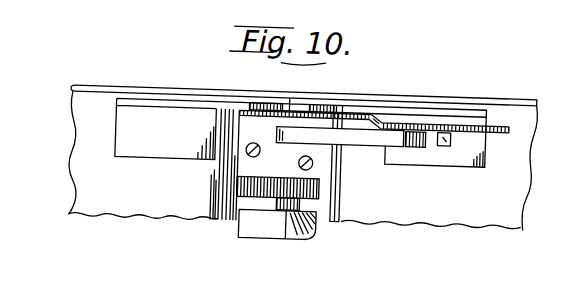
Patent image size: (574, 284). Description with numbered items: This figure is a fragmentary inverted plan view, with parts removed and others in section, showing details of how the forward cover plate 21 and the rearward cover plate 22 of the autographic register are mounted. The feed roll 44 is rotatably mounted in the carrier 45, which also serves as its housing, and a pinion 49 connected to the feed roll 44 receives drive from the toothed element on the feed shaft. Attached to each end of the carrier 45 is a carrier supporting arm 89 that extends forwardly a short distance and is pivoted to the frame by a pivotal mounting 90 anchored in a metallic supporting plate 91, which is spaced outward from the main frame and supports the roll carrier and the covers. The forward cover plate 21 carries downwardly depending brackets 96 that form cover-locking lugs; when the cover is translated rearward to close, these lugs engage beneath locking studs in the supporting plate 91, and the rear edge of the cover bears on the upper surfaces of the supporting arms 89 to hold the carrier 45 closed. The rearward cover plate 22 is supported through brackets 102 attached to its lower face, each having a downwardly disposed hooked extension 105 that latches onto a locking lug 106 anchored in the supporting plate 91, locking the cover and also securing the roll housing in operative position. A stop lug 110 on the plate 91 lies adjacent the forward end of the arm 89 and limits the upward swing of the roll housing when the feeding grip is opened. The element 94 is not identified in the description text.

The forward cover plate 21 is at (427, 207).
The rearward cover plate 22 is at (82, 130).
The feed roll 44 is at (273, 224).
The carrier 45 is at (330, 214).
The pinion 49 is at (242, 186).
The carrier supporting arm 89 is at (366, 136).
The pivotal mounting 90 is at (407, 111).
The supporting plate 91 is at (507, 119).
The spring strip 94 is at (345, 105).
The bracket 96 is at (467, 97).
The bracket 102 is at (168, 74).
The hooked extension 105 is at (288, 97).
The locking lug 106 is at (257, 95).
The stop lug 110 is at (450, 135).